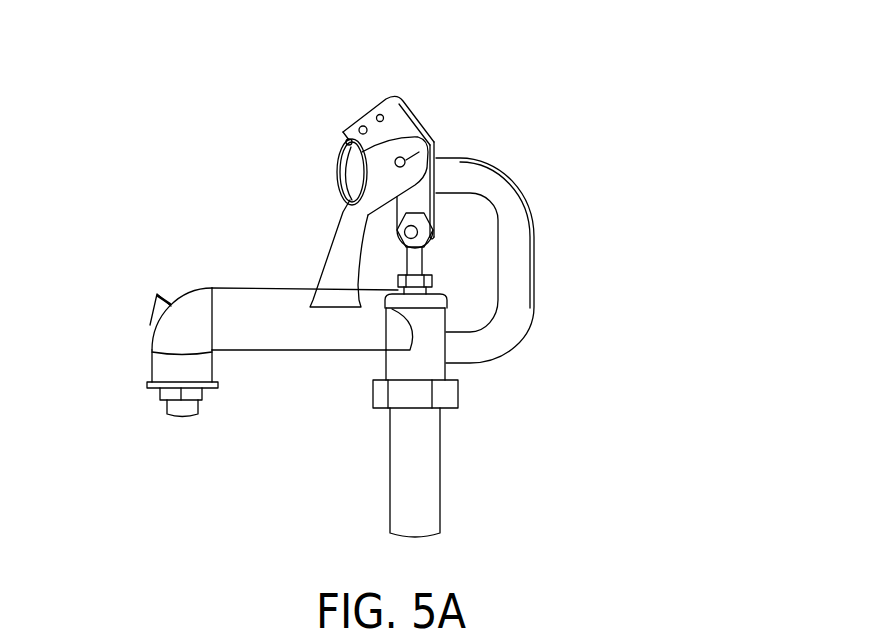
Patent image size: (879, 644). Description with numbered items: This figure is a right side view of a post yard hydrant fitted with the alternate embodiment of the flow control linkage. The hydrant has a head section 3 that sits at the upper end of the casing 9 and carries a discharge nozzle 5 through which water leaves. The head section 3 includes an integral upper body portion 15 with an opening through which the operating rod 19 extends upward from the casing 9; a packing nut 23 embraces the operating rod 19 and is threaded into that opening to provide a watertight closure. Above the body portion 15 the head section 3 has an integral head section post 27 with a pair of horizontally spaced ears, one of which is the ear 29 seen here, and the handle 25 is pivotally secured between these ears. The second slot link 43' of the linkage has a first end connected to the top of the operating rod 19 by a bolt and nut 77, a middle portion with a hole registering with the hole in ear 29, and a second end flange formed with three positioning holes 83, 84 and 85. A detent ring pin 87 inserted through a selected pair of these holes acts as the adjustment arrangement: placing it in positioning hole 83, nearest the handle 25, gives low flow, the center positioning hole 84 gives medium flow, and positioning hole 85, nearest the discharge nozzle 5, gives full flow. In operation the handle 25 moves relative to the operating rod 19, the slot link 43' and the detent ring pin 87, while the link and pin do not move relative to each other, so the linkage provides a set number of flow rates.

The head section 3 is at (292, 336).
The discharge nozzle 5 is at (147, 387).
The casing 9 is at (415, 440).
The upper body portion 15 is at (427, 323).
The operating rod 19 is at (418, 258).
The packing nut 23 is at (441, 297).
The handle 25 is at (515, 272).
The head section post 27 is at (355, 219).
The ear 29 is at (436, 142).
The second slot link 43' is at (424, 97).
The nut 77 is at (421, 213).
The positioning hole 83 is at (379, 115).
The positioning hole 84 is at (360, 127).
The positioning hole 85 is at (338, 131).
The detent ring pin 87 is at (337, 172).